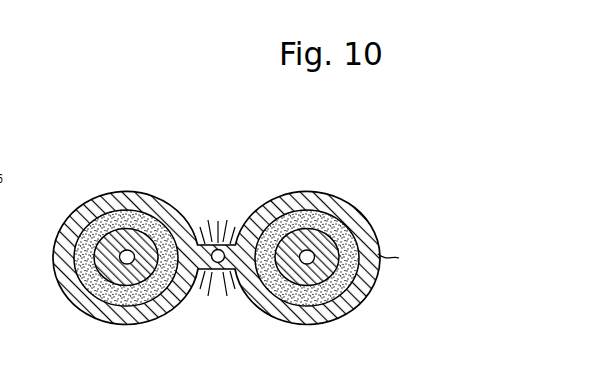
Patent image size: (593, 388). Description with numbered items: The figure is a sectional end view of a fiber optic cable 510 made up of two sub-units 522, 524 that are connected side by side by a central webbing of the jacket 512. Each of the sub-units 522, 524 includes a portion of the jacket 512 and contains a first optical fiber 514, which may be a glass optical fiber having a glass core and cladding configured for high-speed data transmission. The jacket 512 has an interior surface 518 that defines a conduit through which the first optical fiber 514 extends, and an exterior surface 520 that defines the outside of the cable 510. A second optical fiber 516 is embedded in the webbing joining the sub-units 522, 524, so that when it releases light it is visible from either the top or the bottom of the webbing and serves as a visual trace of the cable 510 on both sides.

The fiber optic cable 510 is at (72, 165).
The jacket 512 is at (152, 192).
The first optical fiber 514 is at (119, 283).
The second optical fiber 516 is at (218, 260).
The interior surface 518 is at (150, 212).
The exterior surface 520 is at (156, 190).
The sub-unit 522 is at (293, 211).
The sub-unit 524 is at (397, 257).